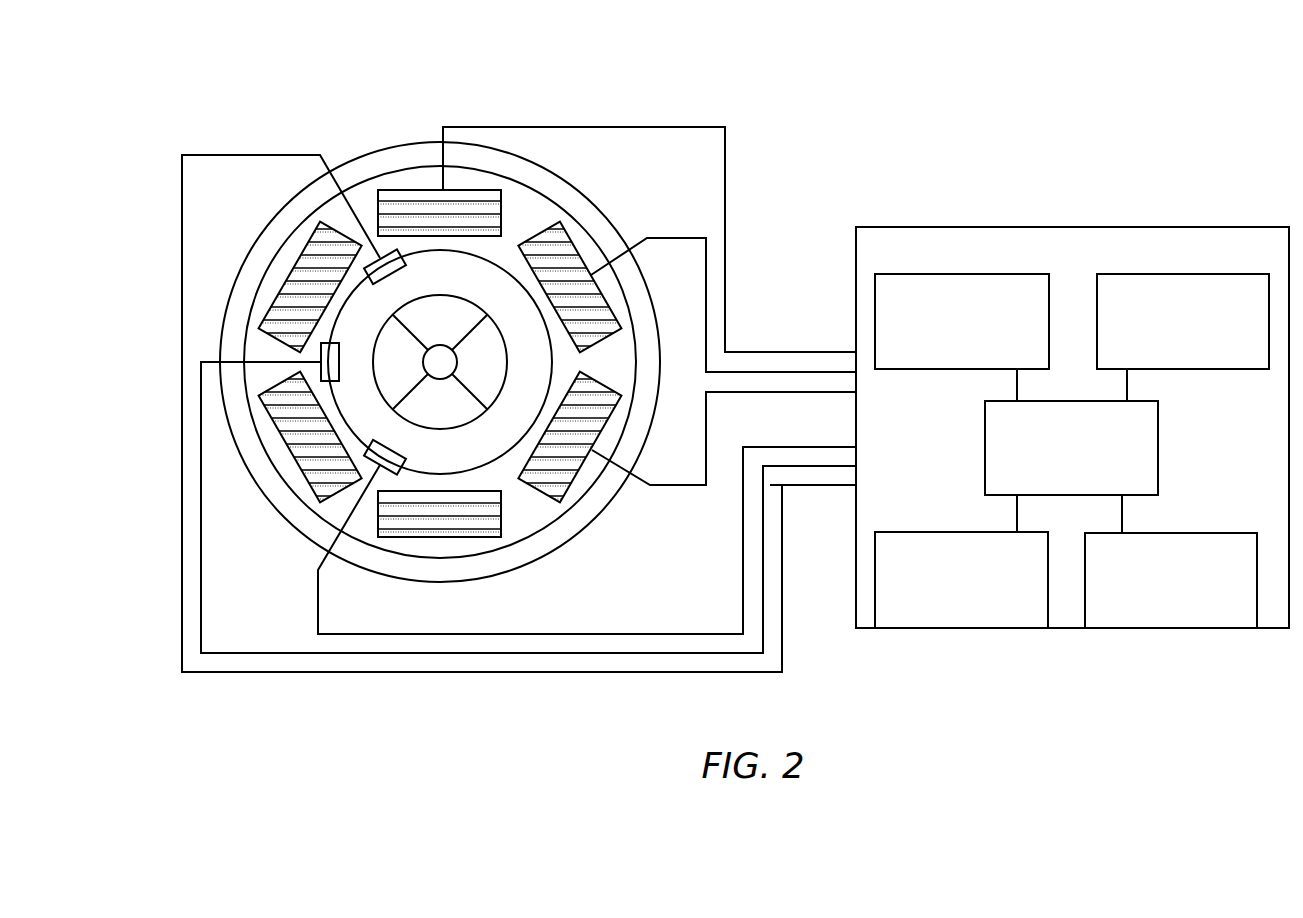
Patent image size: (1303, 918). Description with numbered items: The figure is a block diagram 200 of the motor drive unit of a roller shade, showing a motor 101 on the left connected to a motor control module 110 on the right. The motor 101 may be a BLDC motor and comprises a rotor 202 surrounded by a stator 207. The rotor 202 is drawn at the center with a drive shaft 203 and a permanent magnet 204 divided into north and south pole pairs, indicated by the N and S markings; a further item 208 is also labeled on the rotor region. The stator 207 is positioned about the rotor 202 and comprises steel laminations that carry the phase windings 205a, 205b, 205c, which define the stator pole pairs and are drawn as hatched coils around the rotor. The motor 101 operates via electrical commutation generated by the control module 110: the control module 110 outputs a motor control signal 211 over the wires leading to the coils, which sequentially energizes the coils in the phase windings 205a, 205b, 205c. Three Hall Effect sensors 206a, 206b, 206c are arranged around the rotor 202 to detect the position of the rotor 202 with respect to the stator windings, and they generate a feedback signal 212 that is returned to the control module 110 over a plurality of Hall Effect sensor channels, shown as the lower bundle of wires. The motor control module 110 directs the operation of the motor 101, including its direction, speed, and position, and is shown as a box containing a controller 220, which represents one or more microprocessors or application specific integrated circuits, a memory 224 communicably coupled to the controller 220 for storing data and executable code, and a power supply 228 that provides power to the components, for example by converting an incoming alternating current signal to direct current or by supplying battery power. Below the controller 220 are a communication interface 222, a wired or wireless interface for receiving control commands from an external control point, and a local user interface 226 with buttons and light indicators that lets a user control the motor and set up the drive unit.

The block diagram 200 is at (687, 63).
The motor 101 is at (377, 145).
The stator 207 is at (530, 198).
The phase winding 205a is at (288, 275).
The phase winding 205b is at (290, 455).
The phase winding 205c is at (500, 516).
The Hall Effect sensor 206a is at (400, 262).
The Hall Effect sensor 206b is at (333, 373).
The Hall Effect sensor 206c is at (392, 458).
The rotor 208 is at (390, 316).
The rotor 202 is at (380, 338).
The permanent magnet 204 is at (487, 338).
The drive shaft 203 is at (447, 368).
The motor control signal 211 is at (820, 392).
The feedback signal 212 is at (795, 485).
The motor control module 110 is at (897, 262).
The memory 224 is at (943, 346).
The power supply 228 is at (1164, 346).
The controller 220 is at (1052, 472).
The communication interface 222 is at (942, 616).
The user interface 226 is at (1152, 603).